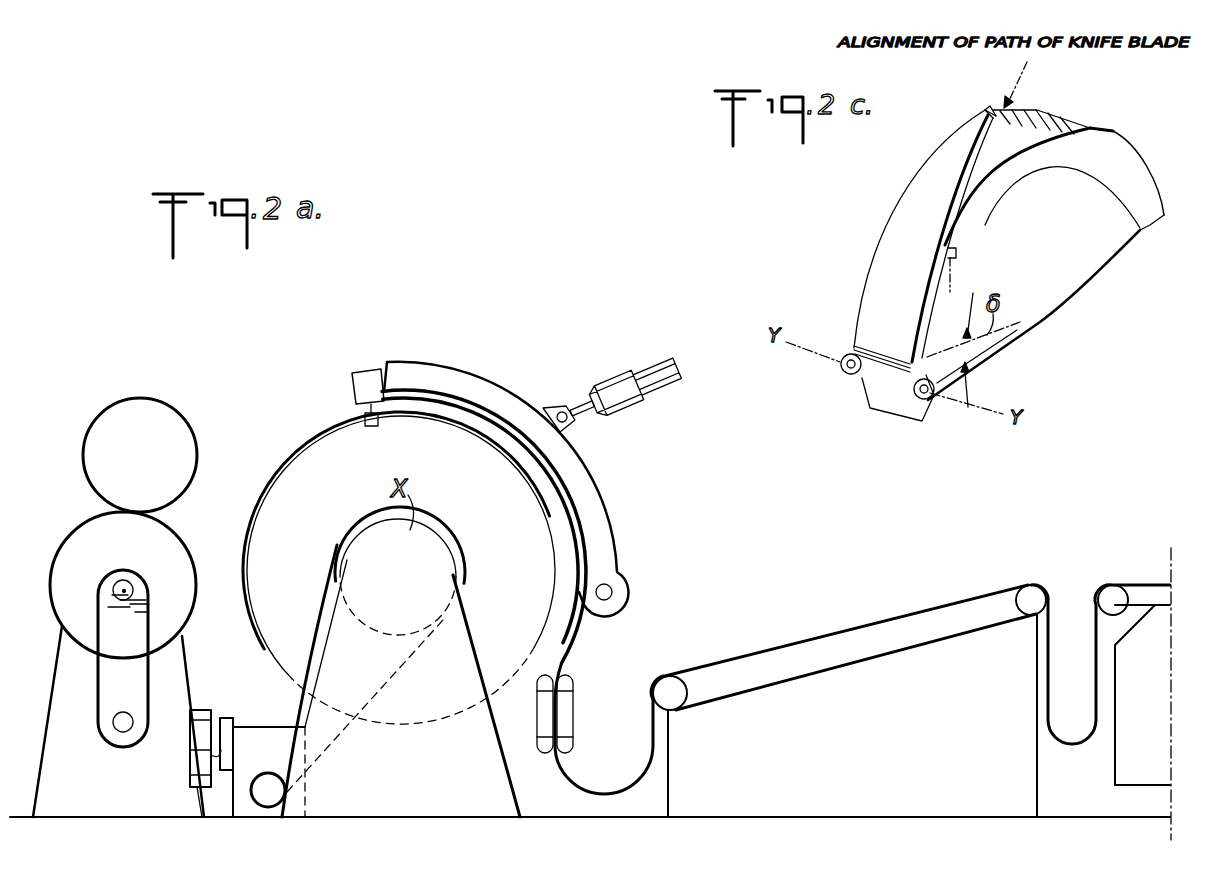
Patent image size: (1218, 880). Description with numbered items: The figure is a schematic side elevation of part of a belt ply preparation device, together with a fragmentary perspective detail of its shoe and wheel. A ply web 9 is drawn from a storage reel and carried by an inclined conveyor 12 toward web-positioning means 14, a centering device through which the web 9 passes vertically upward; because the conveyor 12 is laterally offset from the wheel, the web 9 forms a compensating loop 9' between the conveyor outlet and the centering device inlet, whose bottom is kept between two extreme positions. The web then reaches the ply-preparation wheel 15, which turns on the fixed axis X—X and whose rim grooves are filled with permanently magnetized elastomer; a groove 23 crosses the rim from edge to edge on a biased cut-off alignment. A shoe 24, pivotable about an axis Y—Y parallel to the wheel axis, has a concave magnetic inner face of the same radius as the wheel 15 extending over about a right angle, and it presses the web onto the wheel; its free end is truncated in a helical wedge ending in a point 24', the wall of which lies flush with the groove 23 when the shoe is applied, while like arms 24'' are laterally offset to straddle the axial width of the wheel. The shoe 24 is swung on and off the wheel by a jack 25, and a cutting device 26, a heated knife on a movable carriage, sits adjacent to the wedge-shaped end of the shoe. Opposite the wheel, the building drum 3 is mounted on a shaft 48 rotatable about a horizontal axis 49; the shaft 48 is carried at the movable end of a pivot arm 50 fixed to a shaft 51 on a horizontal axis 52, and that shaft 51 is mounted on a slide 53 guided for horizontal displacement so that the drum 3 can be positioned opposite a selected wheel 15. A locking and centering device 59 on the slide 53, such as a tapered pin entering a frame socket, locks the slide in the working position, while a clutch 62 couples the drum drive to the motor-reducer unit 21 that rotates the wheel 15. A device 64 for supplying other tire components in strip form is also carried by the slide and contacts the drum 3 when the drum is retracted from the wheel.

In FIG. 2A, the building drum 3 is at (77, 532).
In FIG. 2A, the ply web 9 is at (862, 689).
In FIG. 2A, the compensating loop 9' is at (594, 825).
In FIG. 2A, the conveyor 12 is at (875, 652).
In FIG. 2A, the web-positioning means 14 is at (577, 718).
In FIG. 2A, the ply-preparation wheel 15 is at (428, 430).
In FIG. 2C, the ply-preparation wheel 15 is at (1100, 145).
In FIG. 2A, the motor-reducer unit 21 is at (247, 735).
In FIG. 2A, the groove 23 is at (368, 428).
In FIG. 2C, the groove 23 is at (958, 250).
In FIG. 2A, the shoe 24 is at (506, 470).
In FIG. 2C, the shoe 24 is at (925, 263).
In FIG. 2C, the point 24' is at (980, 91).
In FIG. 2C, the arms 24'' is at (890, 410).
In FIG. 2A, the jack 25 is at (640, 370).
In FIG. 2A, the cutting device 26 is at (370, 368).
In FIG. 2A, the shaft 48 is at (124, 578).
In FIG. 2A, the horizontal axis 49 is at (140, 582).
In FIG. 2A, the pivot arm 50 is at (110, 612).
In FIG. 2A, the shaft 51 is at (120, 735).
In FIG. 2A, the horizontal axis 52 is at (122, 700).
In FIG. 2A, the slide 53 is at (62, 692).
In FIG. 2A, the locking and centering device 59 is at (200, 748).
In FIG. 2A, the clutch 62 is at (226, 716).
In FIG. 2A, the device for supplying other tire components 64 is at (148, 466).